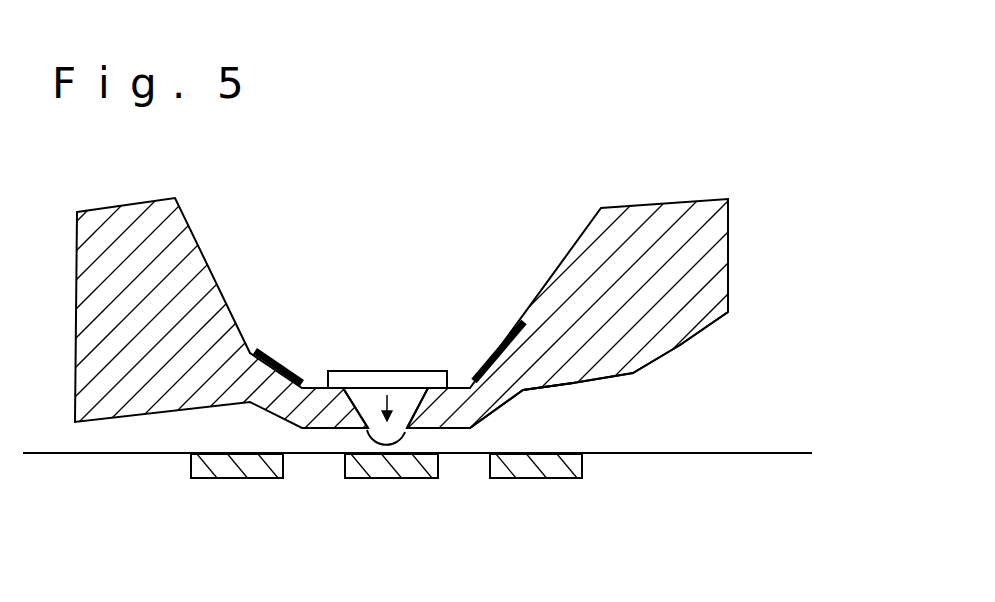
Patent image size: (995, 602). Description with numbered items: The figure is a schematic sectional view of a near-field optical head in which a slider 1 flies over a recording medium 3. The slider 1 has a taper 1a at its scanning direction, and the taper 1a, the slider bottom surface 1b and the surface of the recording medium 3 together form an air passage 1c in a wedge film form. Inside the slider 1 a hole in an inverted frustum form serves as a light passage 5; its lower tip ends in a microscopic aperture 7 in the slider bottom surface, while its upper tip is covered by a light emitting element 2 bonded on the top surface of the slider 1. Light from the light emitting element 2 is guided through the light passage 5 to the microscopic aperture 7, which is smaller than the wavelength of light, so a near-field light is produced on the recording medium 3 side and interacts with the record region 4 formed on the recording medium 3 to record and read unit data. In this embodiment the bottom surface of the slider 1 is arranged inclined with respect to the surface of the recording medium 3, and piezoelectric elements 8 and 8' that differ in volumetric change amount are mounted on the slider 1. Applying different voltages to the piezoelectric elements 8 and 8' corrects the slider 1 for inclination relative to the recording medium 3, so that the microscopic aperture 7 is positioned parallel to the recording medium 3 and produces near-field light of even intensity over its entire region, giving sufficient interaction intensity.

The slider 1 is at (697, 217).
The taper 1a is at (683, 343).
The slider bottom surface 1b is at (572, 384).
The air passage 1c is at (636, 417).
The light emitting element 2 is at (407, 378).
The recording medium 3 is at (417, 477).
The record region 4 is at (548, 465).
The light passage 5 is at (366, 400).
The microscopic aperture 7 is at (385, 426).
The piezoelectric element 8 is at (499, 338).
The piezoelectric element 8' is at (285, 344).